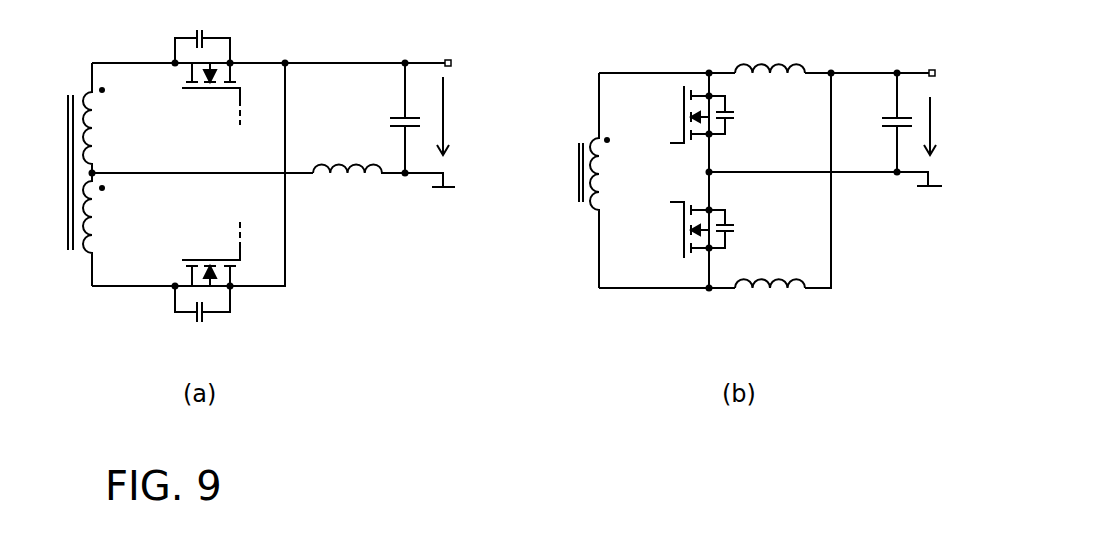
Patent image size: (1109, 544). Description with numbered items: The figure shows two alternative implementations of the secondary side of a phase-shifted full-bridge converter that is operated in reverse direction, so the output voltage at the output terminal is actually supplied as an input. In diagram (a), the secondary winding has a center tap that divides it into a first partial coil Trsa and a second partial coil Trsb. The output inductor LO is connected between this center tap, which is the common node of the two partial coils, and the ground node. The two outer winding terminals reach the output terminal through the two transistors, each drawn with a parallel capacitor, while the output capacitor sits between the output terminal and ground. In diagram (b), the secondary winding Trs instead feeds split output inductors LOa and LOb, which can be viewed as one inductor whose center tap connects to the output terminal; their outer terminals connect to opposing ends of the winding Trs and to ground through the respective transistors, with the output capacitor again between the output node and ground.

The first partial coil Trsa is at (110, 118).
The second partial coil Trsb is at (110, 229).
The secondary winding Trs is at (616, 180).
The output inductor LO is at (381, 163).
The output inductor LOa is at (770, 55).
The output inductor LOb is at (770, 270).